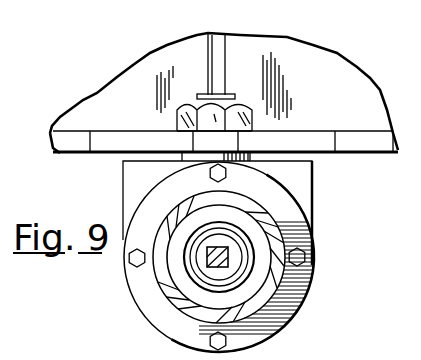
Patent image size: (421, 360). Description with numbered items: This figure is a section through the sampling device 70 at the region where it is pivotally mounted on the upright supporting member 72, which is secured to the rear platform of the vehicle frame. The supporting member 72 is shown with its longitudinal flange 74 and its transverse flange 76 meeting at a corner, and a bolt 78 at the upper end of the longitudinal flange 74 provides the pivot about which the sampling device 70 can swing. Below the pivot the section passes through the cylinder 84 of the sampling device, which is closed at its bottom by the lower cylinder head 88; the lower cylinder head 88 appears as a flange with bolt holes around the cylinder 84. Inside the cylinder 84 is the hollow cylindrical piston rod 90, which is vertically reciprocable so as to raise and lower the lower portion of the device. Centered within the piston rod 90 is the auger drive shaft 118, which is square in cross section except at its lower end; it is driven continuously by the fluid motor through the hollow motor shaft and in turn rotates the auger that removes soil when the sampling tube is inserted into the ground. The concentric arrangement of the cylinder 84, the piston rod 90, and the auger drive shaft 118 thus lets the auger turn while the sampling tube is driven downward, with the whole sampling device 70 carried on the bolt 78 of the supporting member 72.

The upright supporting member 72 is at (258, 70).
The longitudinal flange 74 is at (308, 133).
The transverse flange 76 is at (212, 47).
The bolt 78 is at (202, 94).
The cylinder 84 is at (250, 204).
The lower cylinder head 88 is at (313, 256).
The hollow cylindrical piston rod 90 is at (178, 273).
The auger drive shaft 118 is at (228, 250).
The sampling device 70 is at (318, 357).